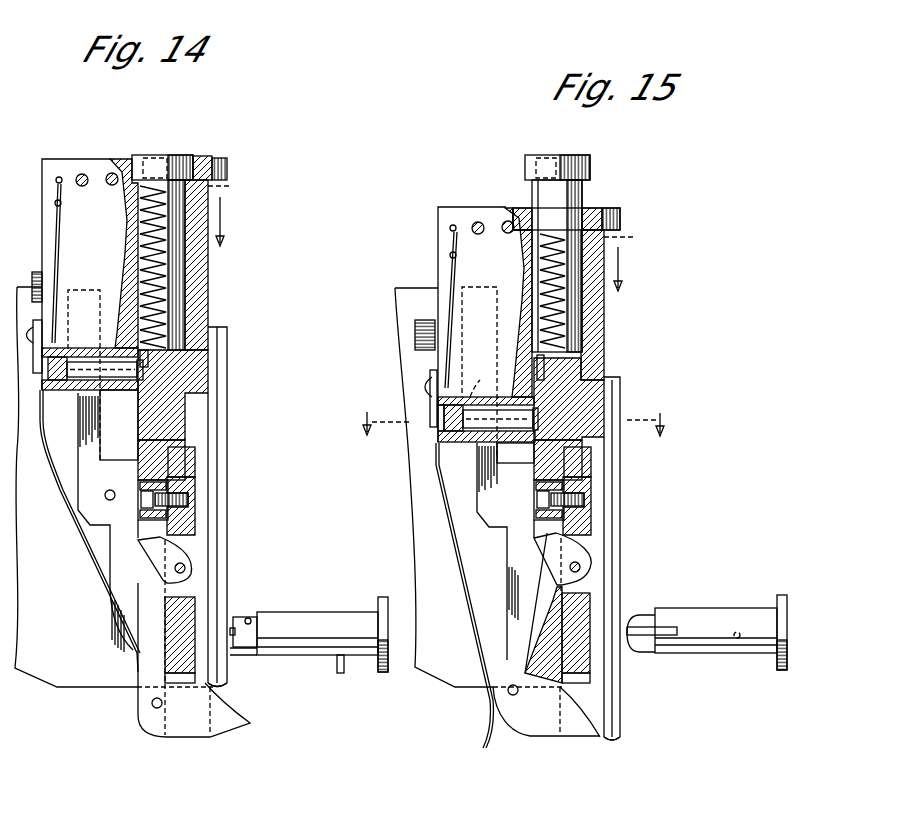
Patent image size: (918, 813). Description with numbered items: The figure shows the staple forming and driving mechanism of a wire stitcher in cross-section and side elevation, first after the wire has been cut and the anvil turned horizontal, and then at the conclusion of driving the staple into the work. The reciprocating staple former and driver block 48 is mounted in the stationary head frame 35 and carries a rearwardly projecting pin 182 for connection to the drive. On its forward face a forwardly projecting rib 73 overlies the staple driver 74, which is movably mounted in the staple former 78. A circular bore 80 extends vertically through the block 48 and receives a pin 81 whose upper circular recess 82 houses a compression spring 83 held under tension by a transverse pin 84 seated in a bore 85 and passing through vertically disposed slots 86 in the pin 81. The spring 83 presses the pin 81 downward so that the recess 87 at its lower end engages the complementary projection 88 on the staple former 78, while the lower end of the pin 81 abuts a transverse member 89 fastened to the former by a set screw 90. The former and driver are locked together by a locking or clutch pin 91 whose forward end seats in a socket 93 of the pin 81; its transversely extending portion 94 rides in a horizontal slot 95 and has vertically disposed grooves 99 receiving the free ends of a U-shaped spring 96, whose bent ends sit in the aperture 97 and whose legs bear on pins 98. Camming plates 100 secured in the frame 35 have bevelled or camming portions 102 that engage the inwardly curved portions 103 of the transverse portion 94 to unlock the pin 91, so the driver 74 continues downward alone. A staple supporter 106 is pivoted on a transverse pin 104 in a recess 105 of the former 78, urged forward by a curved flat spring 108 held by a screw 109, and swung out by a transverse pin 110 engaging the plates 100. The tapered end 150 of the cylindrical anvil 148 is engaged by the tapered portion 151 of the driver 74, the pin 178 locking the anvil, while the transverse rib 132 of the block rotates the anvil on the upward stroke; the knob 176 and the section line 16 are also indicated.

In FIG. 14, the head frame 35 is at (55, 672).
In FIG. 15, the head frame 35 is at (438, 668).
In FIG. 14, the reciprocating staple former and driver block 48 is at (97, 165).
In FIG. 15, the reciprocating staple former and driver block 48 is at (442, 268).
In FIG. 14, the aperture 97 is at (60, 177).
In FIG. 15, the aperture 97 is at (454, 225).
In FIG. 14, the pins 98 is at (56, 200).
In FIG. 15, the pins 98 is at (451, 252).
In FIG. 14, the spring 96 is at (57, 233).
In FIG. 15, the spring 96 is at (450, 303).
In FIG. 14, the transversely extending portion 94 is at (61, 346).
In FIG. 15, the transversely extending portion 94 is at (440, 414).
In FIG. 14, the inwardly curved portions 103 is at (63, 390).
In FIG. 15, the inwardly curved portions 103 is at (449, 444).
In FIG. 14, the bevelled or camming portions 102 is at (77, 300).
In FIG. 15, the bevelled or camming portions 102 is at (466, 290).
In FIG. 14, the transverse pin 84 is at (200, 160).
In FIG. 15, the transverse pin 84 is at (592, 217).
In FIG. 14, the transverse rib 132 is at (220, 162).
In FIG. 15, the transverse rib 132 is at (620, 212).
In FIG. 14, the compression spring 83 is at (229, 215).
In FIG. 15, the compression spring 83 is at (630, 262).
In FIG. 14, the circular bore 80 is at (183, 267).
In FIG. 15, the circular bore 80 is at (582, 312).
In FIG. 14, the circular recess 82 is at (183, 287).
In FIG. 15, the circular recess 82 is at (532, 192).
In FIG. 14, the forwardly projecting rib 73 is at (217, 328).
In FIG. 15, the forwardly projecting rib 73 is at (620, 377).
In FIG. 14, the staple driver 74 is at (220, 409).
In FIG. 15, the staple driver 74 is at (617, 532).
In FIG. 14, the pin 81 is at (203, 376).
In FIG. 15, the pin 81 is at (593, 357).
In FIG. 14, the recess 87 is at (166, 466).
In FIG. 15, the recess 87 is at (563, 462).
In FIG. 14, the socket 93 is at (138, 405).
In FIG. 15, the socket 93 is at (537, 362).
In FIG. 14, the locking or clutch pin 91 is at (115, 390).
In FIG. 15, the locking or clutch pin 91 is at (512, 440).
In FIG. 14, the complementary projection 88 is at (195, 462).
In FIG. 15, the complementary projection 88 is at (590, 461).
In FIG. 14, the set screw 90 is at (190, 497).
In FIG. 15, the set screw 90 is at (587, 497).
In FIG. 14, the staple former 78 is at (190, 516).
In FIG. 15, the staple former 78 is at (587, 520).
In FIG. 14, the transverse member 89 is at (146, 536).
In FIG. 15, the transverse member 89 is at (550, 527).
In FIG. 14, the camming plates 100 is at (90, 510).
In FIG. 15, the camming plates 100 is at (488, 507).
In FIG. 14, the curved flat spring 108 is at (88, 557).
In FIG. 15, the curved flat spring 108 is at (463, 606).
In FIG. 14, the transverse pin 104 is at (187, 567).
In FIG. 15, the transverse pin 104 is at (588, 563).
In FIG. 14, the recess 105 is at (190, 588).
In FIG. 15, the recess 105 is at (586, 589).
In FIG. 14, the staple supporter 106 is at (143, 724).
In FIG. 15, the staple supporter 106 is at (522, 717).
In FIG. 14, the transverse pin 110 is at (152, 703).
In FIG. 15, the transverse pin 110 is at (507, 693).
In FIG. 14, the tapered portion 151 is at (223, 685).
In FIG. 15, the tapered portion 151 is at (618, 738).
In FIG. 14, the anvil 148 is at (318, 612).
In FIG. 15, the anvil 148 is at (708, 610).
In FIG. 14, the knob 176 is at (387, 597).
In FIG. 15, the knob 176 is at (783, 595).
In FIG. 14, the tapered end 150 is at (234, 617).
In FIG. 15, the tapered end 150 is at (641, 652).
In FIG. 14, the pin 178 is at (337, 667).
In FIG. 15, the vertically disposed slots 86 is at (535, 163).
In FIG. 15, the bore 85 is at (607, 213).
In FIG. 15, the rearwardly projecting pin 182 is at (422, 328).
In FIG. 15, the screw 109 is at (422, 380).
In FIG. 15, the horizontal slot 95 is at (440, 440).
In FIG. 15, the vertically disposed grooves 99 is at (480, 378).
In FIG. 15, the section line 16- 16 is at (513, 424).